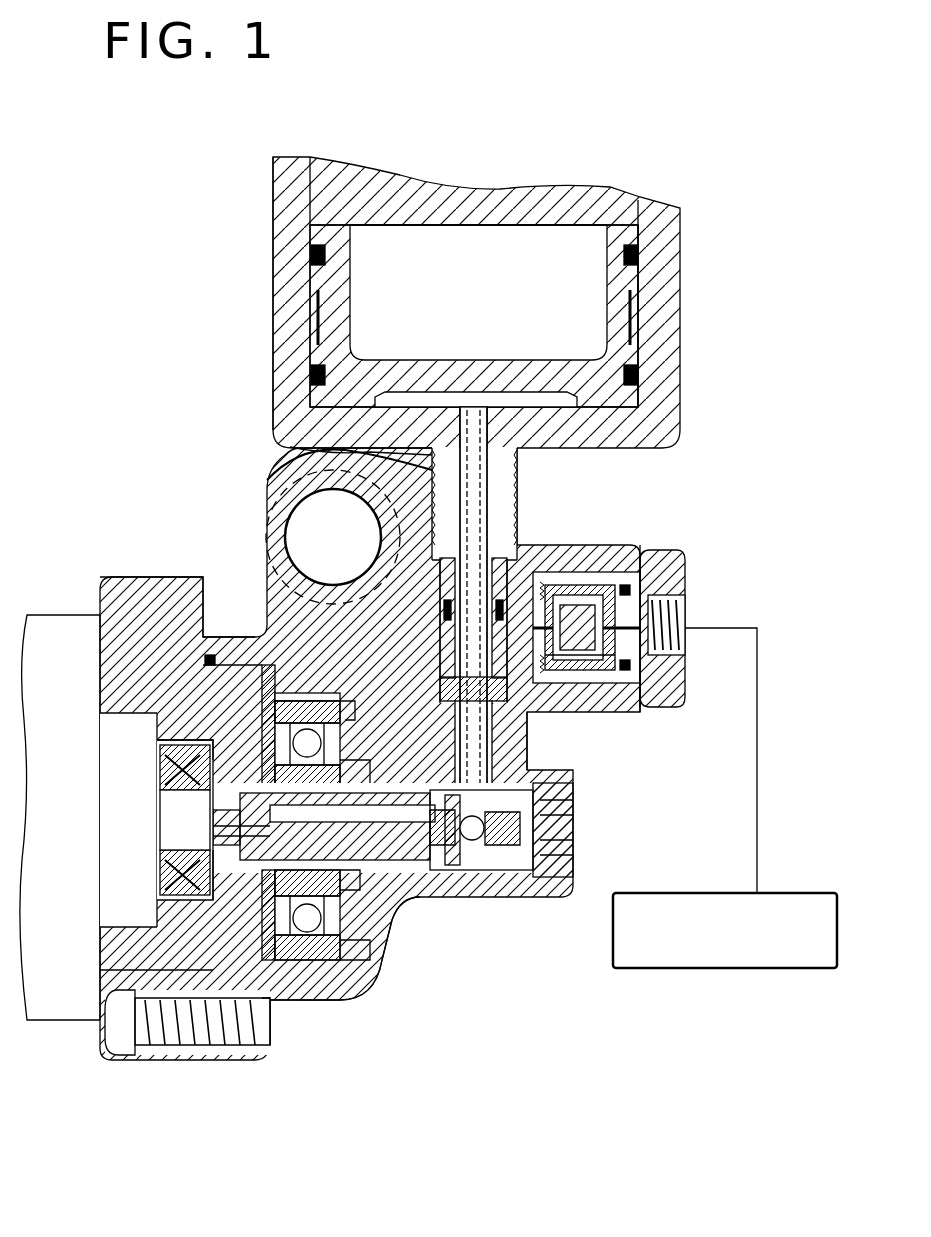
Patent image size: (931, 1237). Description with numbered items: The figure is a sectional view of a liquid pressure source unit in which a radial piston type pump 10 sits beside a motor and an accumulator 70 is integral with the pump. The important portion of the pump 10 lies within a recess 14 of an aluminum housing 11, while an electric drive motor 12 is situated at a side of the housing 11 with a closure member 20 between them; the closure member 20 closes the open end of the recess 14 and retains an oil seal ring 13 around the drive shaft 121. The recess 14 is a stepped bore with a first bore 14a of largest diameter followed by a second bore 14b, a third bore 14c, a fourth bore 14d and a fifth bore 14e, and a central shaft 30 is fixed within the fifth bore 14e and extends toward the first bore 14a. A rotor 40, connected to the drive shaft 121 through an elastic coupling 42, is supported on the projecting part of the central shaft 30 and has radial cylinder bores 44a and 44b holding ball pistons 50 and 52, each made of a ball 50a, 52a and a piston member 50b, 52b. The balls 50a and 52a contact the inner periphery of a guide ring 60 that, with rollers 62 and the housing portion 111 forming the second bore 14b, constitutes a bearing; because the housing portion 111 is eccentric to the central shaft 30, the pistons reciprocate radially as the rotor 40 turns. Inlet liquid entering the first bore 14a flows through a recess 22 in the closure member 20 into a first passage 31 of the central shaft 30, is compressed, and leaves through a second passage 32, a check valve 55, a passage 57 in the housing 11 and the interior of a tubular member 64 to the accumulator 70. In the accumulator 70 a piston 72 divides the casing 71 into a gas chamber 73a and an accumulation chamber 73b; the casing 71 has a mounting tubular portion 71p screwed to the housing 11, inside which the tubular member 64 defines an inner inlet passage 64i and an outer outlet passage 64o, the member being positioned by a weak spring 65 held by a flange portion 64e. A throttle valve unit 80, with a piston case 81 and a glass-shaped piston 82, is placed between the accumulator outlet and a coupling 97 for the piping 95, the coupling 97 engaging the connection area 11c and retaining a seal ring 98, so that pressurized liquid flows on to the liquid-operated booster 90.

The pump 10 is at (327, 1018).
The housing 11 is at (510, 897).
The connection area 11c is at (620, 715).
The electric drive motor 12 is at (38, 1022).
The oil seal ring 13 is at (168, 870).
The recess 14 is at (250, 665).
The first bore 14a is at (212, 1050).
The second bore 14b is at (292, 1005).
The third bore 14c is at (360, 962).
The fourth bore 14d is at (395, 882).
The fifth bore 14e is at (420, 890).
The closure member 20 is at (150, 600).
The recess 22 is at (118, 990).
The central shaft 30 is at (478, 875).
The first passage 31 is at (205, 830).
The second passage 32 is at (385, 812).
The rotor 40 is at (170, 930).
The elastic coupling 42 is at (135, 742).
The cylinder bore 44a is at (235, 690).
The cylinder bore 44b is at (275, 1010).
The ball piston 50 is at (290, 708).
The ball 50a is at (345, 712).
The piston member 50b is at (355, 765).
The ball piston 52 is at (330, 962).
The ball 52a is at (345, 935).
The piston member 52b is at (350, 905).
The check valve 55 is at (500, 830).
The passage 57 is at (505, 725).
The guide ring 60 is at (285, 695).
The roller 62 is at (300, 688).
The tubular member 64 is at (490, 500).
The outlet passage 64o is at (490, 465).
The inlet passage 64i is at (480, 520).
The flange portion 64e is at (482, 760).
The spring 65 is at (505, 690).
The accumulator 70 is at (692, 302).
The casing 71 is at (292, 263).
The mounting tubular portion 71p is at (432, 465).
The piston 72 is at (640, 340).
The gas chamber 73a is at (496, 283).
The accumulation chamber 73b is at (442, 395).
The throttle valve unit 80 is at (622, 582).
The piston case 81 is at (580, 582).
The piston 82 is at (603, 690).
The liquid-operated booster 90 is at (730, 968).
The piping 95 is at (750, 636).
The coupling 97 is at (660, 590).
The seal ring 98 is at (652, 700).
The housing portion 111 is at (300, 560).
The drive shaft 121 is at (125, 792).